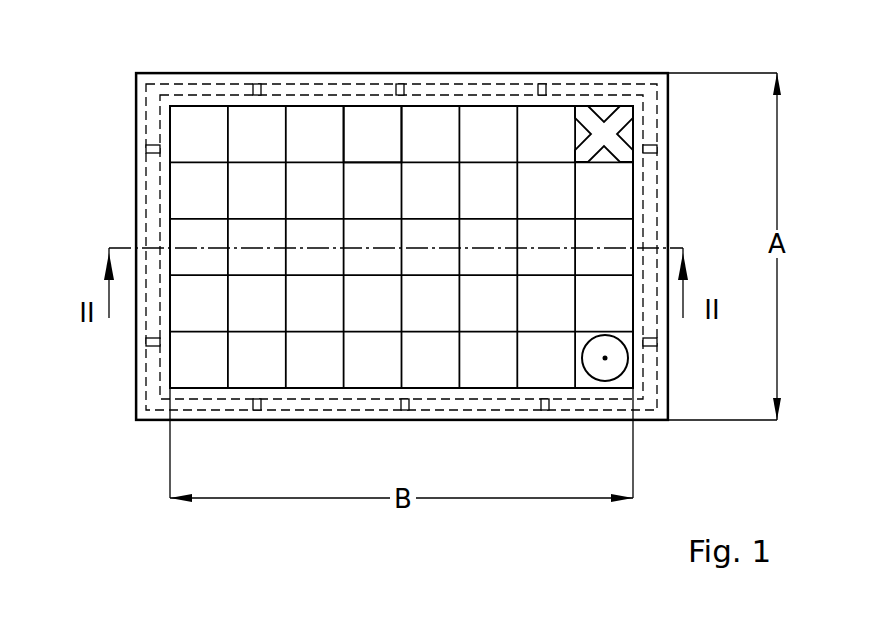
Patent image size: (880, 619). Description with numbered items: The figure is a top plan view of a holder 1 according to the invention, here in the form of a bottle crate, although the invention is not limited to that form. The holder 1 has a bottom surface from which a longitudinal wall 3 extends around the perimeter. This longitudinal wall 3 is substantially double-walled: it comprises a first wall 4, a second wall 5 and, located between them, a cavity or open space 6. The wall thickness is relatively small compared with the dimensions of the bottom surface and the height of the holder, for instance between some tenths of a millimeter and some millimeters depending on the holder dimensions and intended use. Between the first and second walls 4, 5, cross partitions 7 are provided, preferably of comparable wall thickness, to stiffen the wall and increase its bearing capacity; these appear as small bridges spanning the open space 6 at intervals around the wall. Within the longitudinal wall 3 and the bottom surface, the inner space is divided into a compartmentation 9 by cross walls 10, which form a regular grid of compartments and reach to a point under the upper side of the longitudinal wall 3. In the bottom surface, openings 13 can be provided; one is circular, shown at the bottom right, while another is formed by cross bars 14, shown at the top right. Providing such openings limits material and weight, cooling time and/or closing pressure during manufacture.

The holder 1 is at (84, 445).
The longitudinal wall 3 is at (493, 415).
The first wall 4 is at (170, 135).
The second wall 5 is at (137, 170).
The cavity or open space 6 is at (158, 207).
The cross partitions 7 is at (651, 347).
The compartmentation 9 is at (363, 134).
The cross walls 10 is at (227, 133).
The openings 13 is at (621, 131).
The cross bars 14 is at (587, 117).